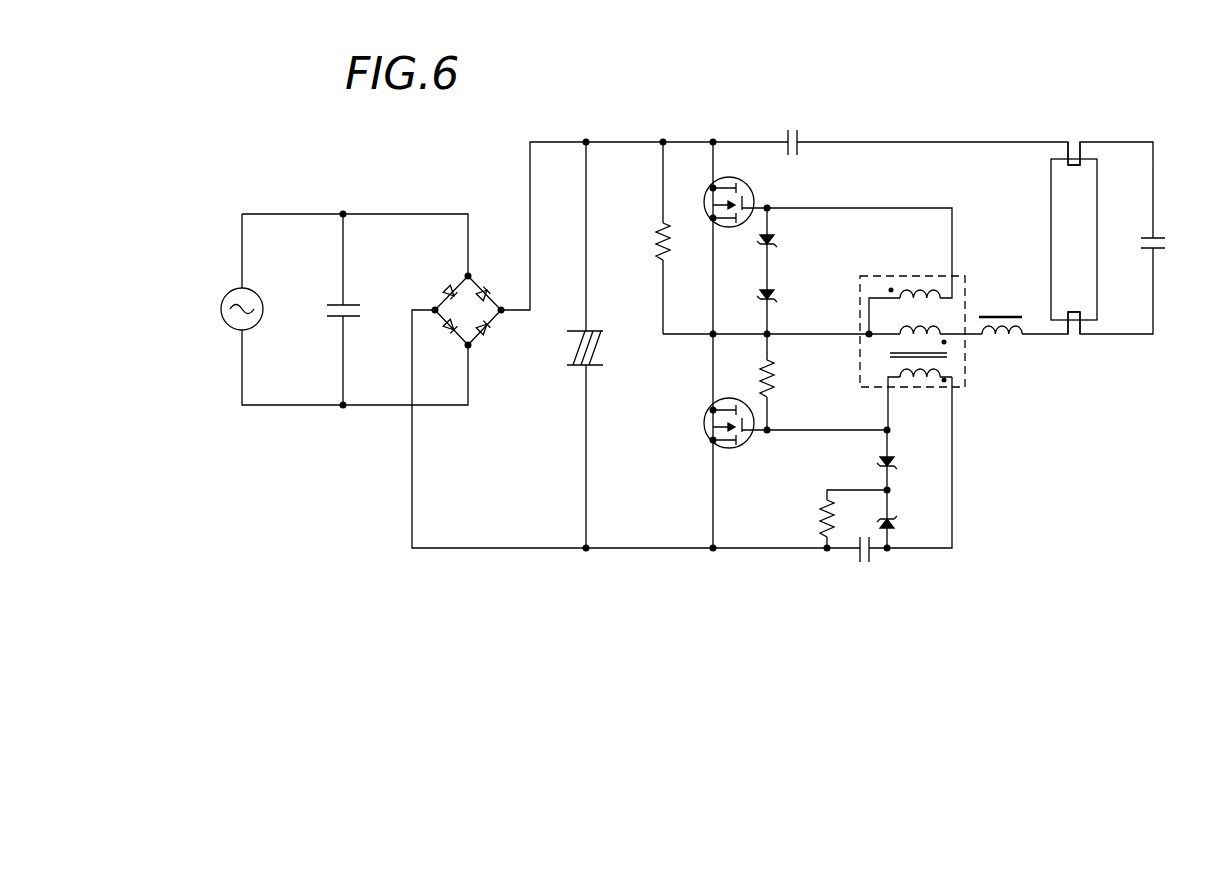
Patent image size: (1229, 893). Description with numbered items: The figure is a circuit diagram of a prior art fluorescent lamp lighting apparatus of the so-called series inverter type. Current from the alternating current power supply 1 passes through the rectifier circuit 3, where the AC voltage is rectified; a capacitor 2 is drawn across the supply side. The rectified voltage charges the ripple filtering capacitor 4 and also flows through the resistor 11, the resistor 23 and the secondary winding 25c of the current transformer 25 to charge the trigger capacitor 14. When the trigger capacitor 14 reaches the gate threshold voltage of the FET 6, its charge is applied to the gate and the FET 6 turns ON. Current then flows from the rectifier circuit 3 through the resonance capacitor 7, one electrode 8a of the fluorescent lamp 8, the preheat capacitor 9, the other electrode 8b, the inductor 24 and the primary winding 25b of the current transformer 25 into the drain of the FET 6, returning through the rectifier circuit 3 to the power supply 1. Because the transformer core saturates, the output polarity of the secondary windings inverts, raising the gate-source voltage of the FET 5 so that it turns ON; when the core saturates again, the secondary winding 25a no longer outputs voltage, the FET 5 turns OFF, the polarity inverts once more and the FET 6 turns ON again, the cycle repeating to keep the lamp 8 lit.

The alternating current power supply 1 is at (229, 292).
The capacitor 2 is at (333, 315).
The rectifier circuit 3 is at (475, 272).
The ripple filtering capacitor 4 is at (565, 352).
The FET 5 is at (752, 180).
The FET 6 is at (703, 423).
The resonance capacitor 7 is at (790, 127).
The fluorescent lamp 8 is at (1119, 245).
The electrode 8a is at (1080, 170).
The electrode 8b is at (1080, 315).
The preheat capacitor 9 is at (1165, 246).
The resistor 11 is at (659, 235).
The trigger capacitor 14 is at (861, 566).
The resistor 23 is at (774, 378).
The inductor 24 is at (1012, 338).
The current transformer 25 is at (917, 337).
The secondary winding 25a is at (918, 288).
The primary winding 25b is at (900, 340).
The secondary winding 25c is at (924, 379).